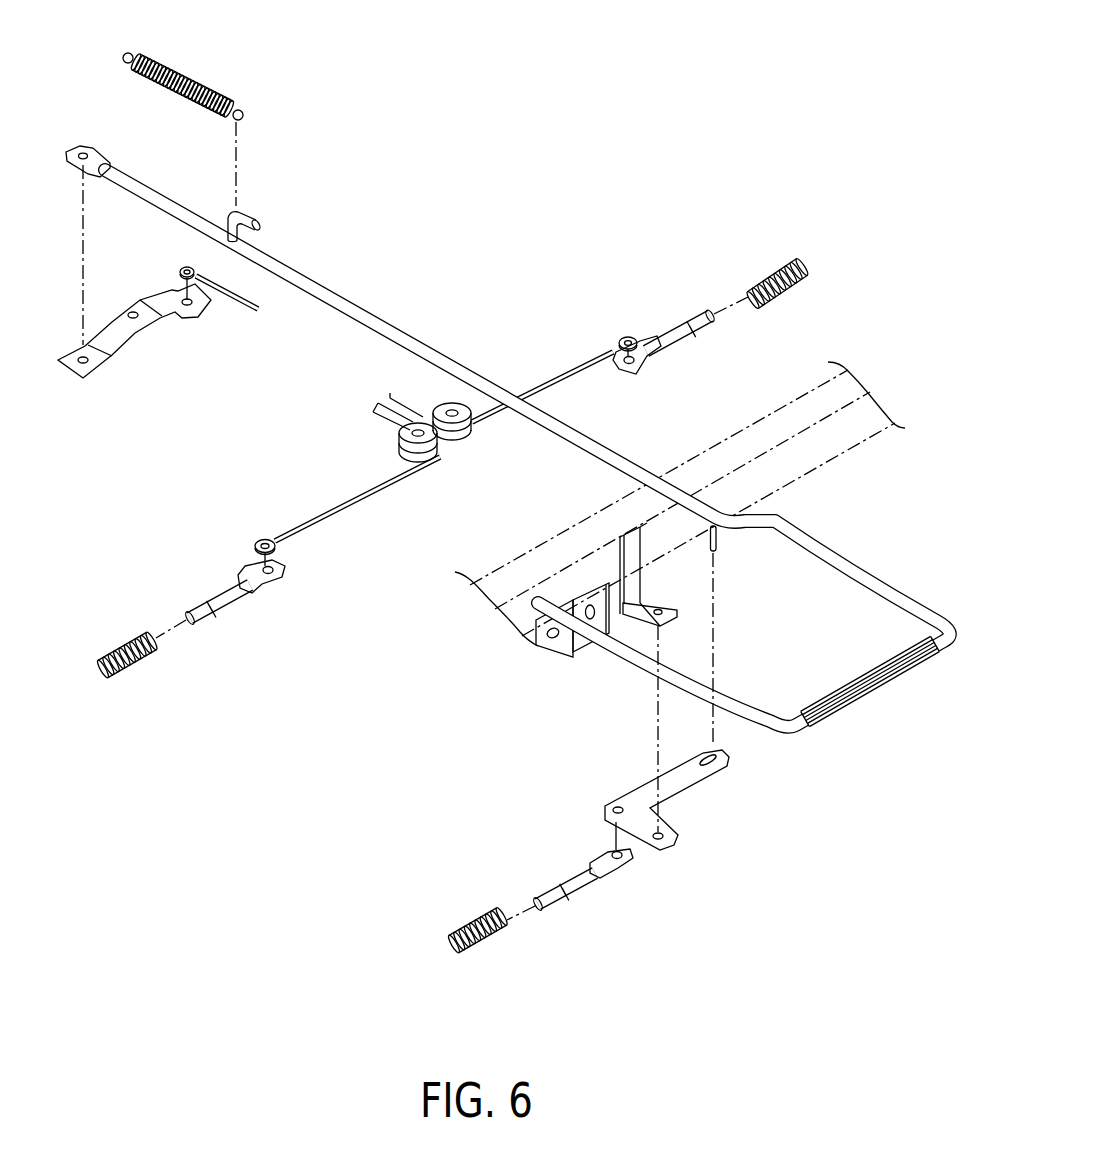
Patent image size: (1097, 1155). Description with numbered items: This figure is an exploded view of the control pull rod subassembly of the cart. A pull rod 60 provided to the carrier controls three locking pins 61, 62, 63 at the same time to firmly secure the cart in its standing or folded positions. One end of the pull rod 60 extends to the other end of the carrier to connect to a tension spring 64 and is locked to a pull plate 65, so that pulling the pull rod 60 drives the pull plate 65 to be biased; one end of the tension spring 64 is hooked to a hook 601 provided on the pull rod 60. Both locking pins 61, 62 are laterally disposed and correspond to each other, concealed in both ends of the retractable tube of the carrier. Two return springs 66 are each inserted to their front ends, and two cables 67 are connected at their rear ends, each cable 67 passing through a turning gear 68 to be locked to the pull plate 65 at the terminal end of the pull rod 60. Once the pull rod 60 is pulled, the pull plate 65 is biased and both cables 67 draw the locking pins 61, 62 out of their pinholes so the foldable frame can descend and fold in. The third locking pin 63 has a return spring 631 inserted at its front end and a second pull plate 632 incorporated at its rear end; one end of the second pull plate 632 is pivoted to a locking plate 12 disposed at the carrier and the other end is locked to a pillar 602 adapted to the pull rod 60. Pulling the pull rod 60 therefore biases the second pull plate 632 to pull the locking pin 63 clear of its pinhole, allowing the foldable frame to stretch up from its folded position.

The locking plate 12 is at (631, 583).
The pull rod 60 is at (850, 702).
The hook 601 is at (257, 209).
The pillar 602 is at (718, 542).
The locking pin 61 is at (262, 598).
The locking pin 62 is at (648, 345).
The third locking pin 63 is at (578, 888).
The return spring 631 is at (490, 952).
The second pull plate 632 is at (700, 796).
The tension spring 64 is at (198, 72).
The pull plate 65 is at (103, 356).
The return spring 66 is at (763, 285).
The cable 67 is at (570, 365).
The turning gear 68 is at (455, 407).